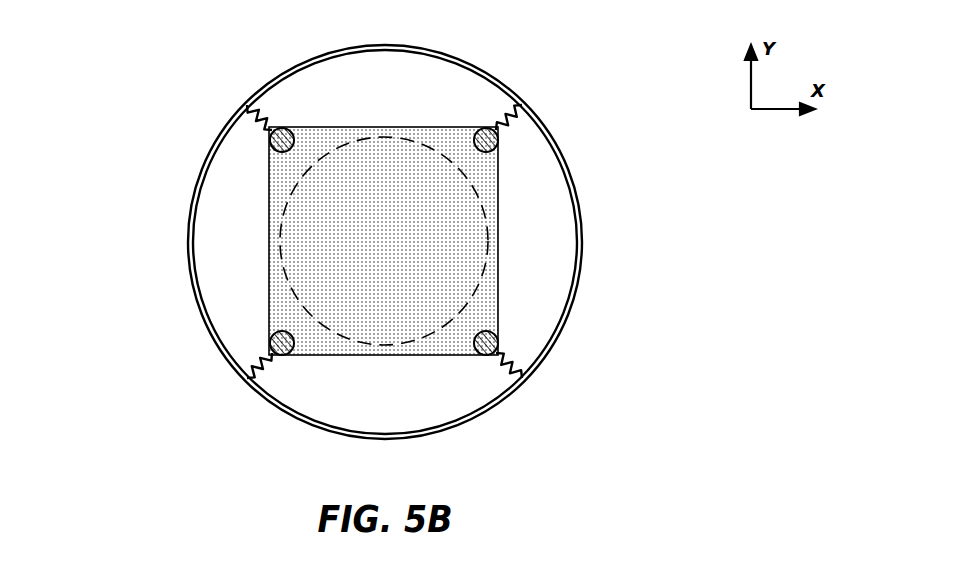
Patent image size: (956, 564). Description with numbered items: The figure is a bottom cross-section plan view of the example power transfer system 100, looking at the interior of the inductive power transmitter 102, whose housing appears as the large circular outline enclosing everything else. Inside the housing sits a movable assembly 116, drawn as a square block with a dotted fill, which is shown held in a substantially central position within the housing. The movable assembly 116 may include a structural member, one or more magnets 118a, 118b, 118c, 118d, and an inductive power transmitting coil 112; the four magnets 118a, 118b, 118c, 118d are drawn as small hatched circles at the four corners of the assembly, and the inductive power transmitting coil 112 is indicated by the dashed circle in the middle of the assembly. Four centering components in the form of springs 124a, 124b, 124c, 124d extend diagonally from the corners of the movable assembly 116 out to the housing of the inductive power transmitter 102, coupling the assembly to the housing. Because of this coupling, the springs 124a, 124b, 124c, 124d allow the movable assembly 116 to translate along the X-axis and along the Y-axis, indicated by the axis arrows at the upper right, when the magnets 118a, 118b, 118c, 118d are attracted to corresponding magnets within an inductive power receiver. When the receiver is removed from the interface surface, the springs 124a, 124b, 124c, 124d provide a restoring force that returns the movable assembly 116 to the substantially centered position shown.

The power transfer system 100 is at (68, 10).
The inductive power transmitter 102 is at (188, 241).
The inductive power transmitting coil 112 is at (498, 248).
The movable assembly 116 is at (498, 185).
The magnet 118a is at (269, 141).
The magnet 118b is at (269, 343).
The magnet 118c is at (498, 345).
The magnet 118d is at (498, 142).
The spring 124a is at (246, 104).
The spring 124b is at (246, 380).
The spring 124c is at (522, 379).
The spring 124d is at (522, 106).